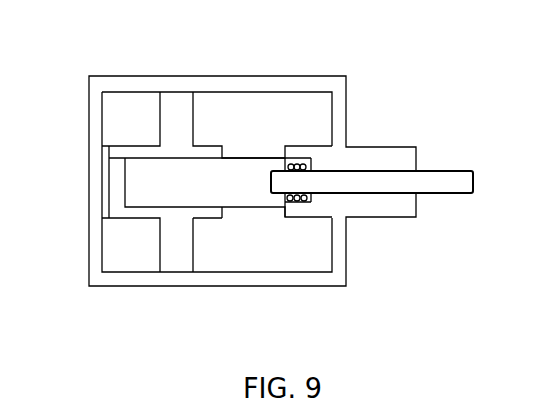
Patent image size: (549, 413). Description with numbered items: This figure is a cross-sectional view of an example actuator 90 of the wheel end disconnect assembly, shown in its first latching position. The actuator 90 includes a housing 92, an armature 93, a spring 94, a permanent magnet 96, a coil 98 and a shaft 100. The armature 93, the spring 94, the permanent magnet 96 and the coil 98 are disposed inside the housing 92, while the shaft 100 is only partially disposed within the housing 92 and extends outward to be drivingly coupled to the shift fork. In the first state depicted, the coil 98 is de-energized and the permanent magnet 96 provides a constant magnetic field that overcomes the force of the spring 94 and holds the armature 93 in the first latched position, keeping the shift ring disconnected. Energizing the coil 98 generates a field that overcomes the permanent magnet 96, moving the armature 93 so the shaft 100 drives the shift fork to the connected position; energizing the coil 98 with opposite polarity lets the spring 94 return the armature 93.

The actuator 90 is at (260, 178).
The housing 92 is at (224, 83).
The armature 93 is at (146, 182).
The spring 94 is at (291, 150).
The permanent magnet 96 is at (134, 247).
The coil 98 is at (276, 248).
The shaft 100 is at (372, 189).